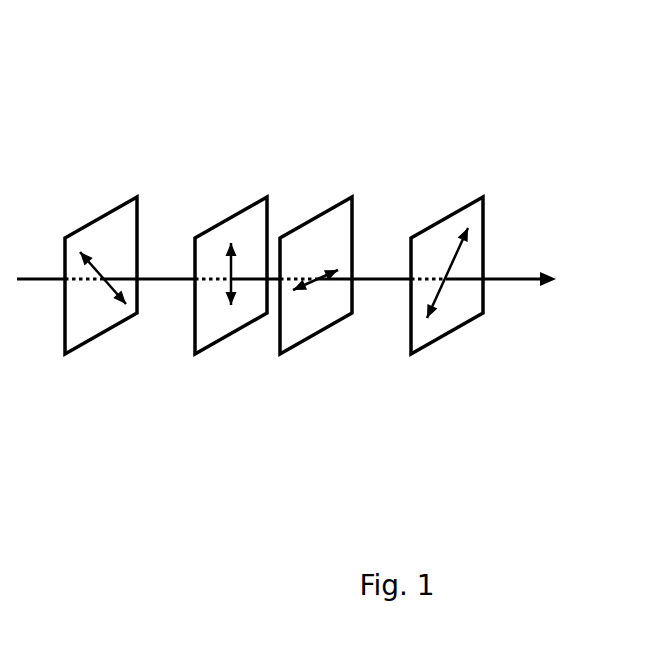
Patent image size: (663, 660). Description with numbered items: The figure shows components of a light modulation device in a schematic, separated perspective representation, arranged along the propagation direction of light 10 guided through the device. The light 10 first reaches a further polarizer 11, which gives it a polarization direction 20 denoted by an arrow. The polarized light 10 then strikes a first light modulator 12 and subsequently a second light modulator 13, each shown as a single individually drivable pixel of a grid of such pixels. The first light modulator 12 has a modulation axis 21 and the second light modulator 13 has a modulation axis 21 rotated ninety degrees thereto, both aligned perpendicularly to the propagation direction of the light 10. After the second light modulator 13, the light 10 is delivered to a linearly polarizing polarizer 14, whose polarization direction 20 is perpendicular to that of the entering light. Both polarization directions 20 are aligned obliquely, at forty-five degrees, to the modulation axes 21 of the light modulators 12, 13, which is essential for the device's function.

The light 10 is at (161, 278).
The further polarizer 11 is at (103, 211).
The first light modulator 12 is at (232, 211).
The second light modulator 13 is at (317, 211).
The polarizer 14 is at (450, 211).
The polarization direction 20 is at (117, 302).
The modulation axis 21 is at (231, 302).